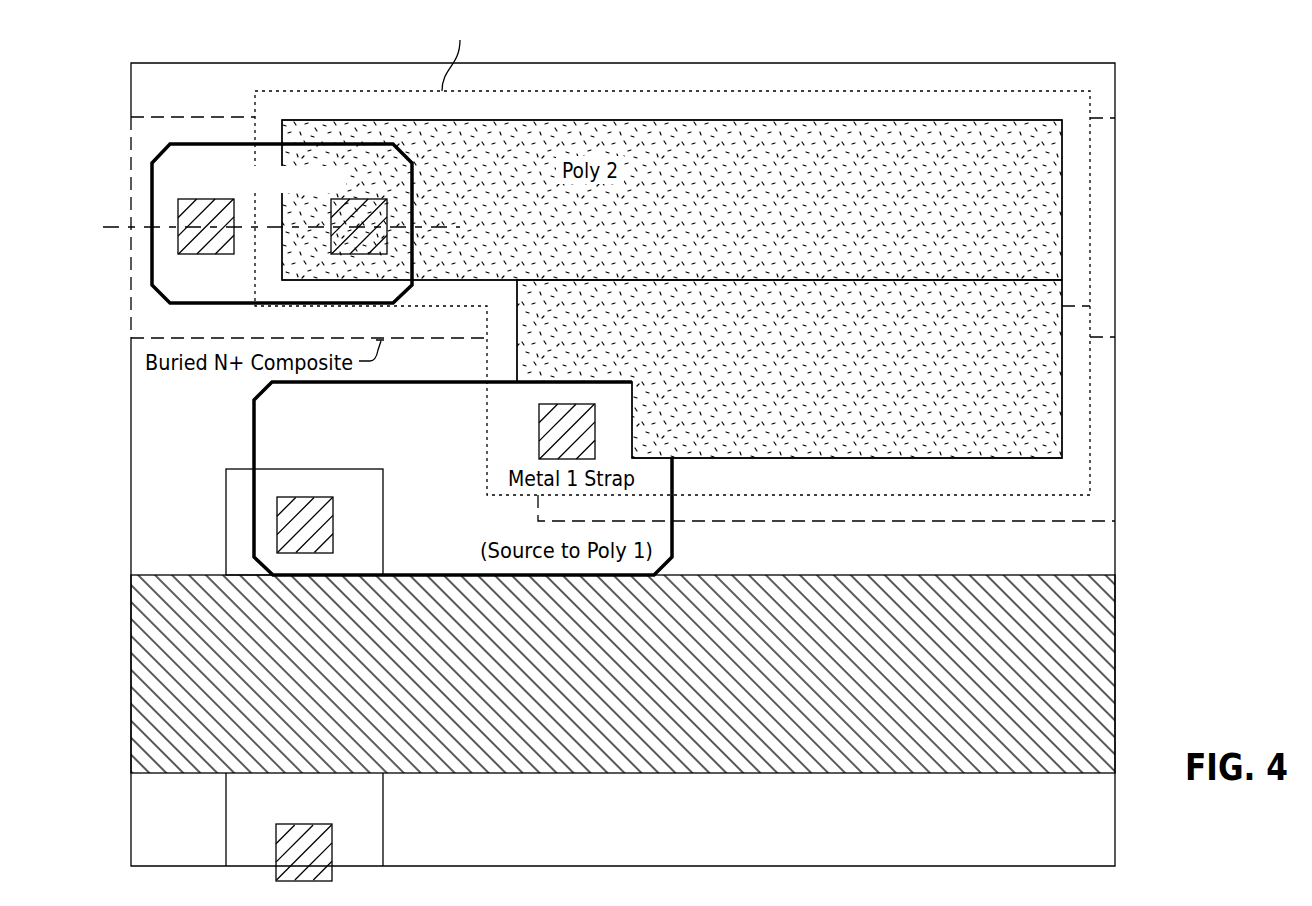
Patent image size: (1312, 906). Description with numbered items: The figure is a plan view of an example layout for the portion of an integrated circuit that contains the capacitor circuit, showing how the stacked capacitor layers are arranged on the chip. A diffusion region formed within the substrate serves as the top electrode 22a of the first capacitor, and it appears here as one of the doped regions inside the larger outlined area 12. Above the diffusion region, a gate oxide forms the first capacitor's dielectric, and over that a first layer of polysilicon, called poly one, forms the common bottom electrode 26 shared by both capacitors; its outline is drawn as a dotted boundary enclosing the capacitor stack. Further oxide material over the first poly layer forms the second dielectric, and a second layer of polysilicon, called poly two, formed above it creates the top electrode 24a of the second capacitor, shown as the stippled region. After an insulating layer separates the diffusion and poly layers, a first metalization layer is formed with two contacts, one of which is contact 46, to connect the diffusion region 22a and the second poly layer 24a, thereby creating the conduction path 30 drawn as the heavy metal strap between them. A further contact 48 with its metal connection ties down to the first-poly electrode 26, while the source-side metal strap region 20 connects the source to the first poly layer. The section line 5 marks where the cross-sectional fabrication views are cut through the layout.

The section line 5 is at (285, 228).
The substrate / active region 12 is at (981, 667).
The source region 20 is at (219, 565).
The top electrode of the first capacitor 22a is at (482, 330).
The top electrode of the second capacitor 24a is at (629, 254).
The common bottom electrode 26 is at (388, 108).
The conduction path 30 is at (412, 155).
The contact 46 is at (188, 199).
The contact 48 is at (365, 199).